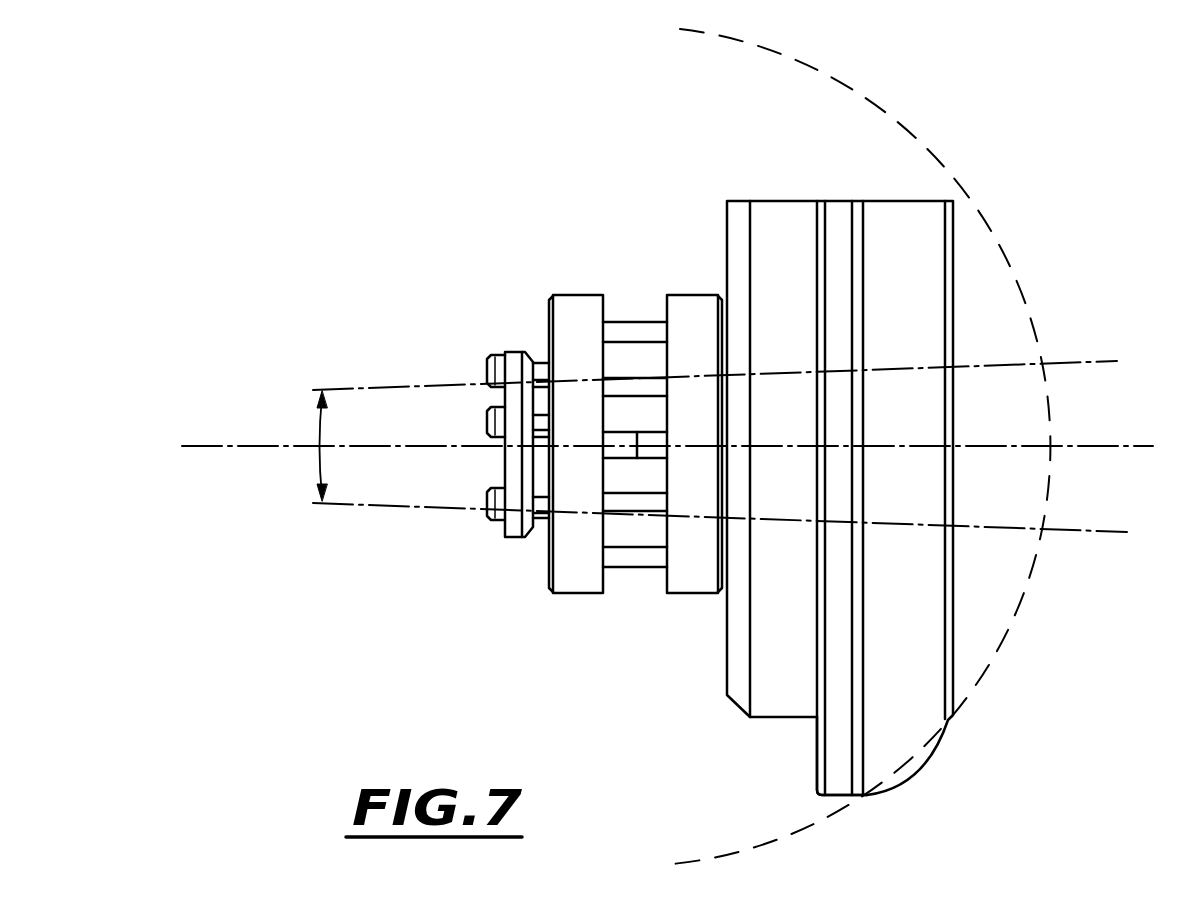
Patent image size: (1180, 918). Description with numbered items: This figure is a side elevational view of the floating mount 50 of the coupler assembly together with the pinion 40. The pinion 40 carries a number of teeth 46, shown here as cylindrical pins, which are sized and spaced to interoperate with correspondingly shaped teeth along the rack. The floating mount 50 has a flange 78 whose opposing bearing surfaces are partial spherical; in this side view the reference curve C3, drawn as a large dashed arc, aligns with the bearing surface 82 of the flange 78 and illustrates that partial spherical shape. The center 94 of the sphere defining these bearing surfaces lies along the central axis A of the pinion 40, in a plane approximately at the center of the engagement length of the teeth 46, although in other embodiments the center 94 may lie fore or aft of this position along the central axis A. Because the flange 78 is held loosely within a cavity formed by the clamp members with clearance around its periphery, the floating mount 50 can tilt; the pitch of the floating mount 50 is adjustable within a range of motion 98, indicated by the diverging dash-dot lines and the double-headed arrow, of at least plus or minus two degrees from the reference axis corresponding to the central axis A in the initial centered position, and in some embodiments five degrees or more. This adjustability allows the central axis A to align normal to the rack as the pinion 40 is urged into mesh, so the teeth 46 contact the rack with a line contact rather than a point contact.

The pinion 40 is at (577, 295).
The teeth 46 is at (629, 353).
The floating mount 50 is at (785, 222).
The bearing surface 82 is at (917, 218).
The flange 78 is at (838, 775).
The center 94 is at (636, 446).
The range of motion 98 is at (319, 431).
The central axis A is at (1133, 447).
The reference curve C3 is at (735, 40).